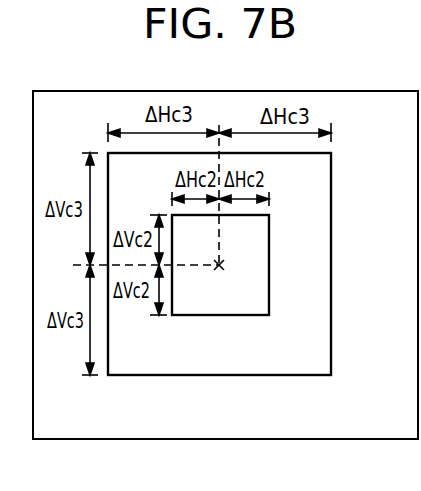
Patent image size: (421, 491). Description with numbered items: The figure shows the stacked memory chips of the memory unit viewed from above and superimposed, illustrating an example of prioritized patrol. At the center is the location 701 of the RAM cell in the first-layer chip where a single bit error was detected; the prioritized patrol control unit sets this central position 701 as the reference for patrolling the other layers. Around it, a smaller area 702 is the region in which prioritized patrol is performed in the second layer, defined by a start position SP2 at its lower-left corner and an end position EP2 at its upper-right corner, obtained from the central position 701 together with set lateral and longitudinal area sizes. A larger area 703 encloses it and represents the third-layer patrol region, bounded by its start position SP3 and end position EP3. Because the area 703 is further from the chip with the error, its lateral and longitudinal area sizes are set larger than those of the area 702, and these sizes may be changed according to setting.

The location of the RAM cell in which the single bit error has occurred 701 is at (219, 273).
The area in which the prioritized patrol is to be performed in the second layer 702 is at (271, 269).
The area in which the prioritized patrol is to be performed in the third layer 703 is at (332, 311).
The end position of the prioritized patrol in the second layer EP2 is at (270, 215).
The end position of the prioritized patrol in the third layer EP3 is at (332, 153).
The start position of the prioritized patrol in the second layer SP2 is at (172, 315).
The start position of the prioritized patrol in the third layer SP3 is at (108, 376).